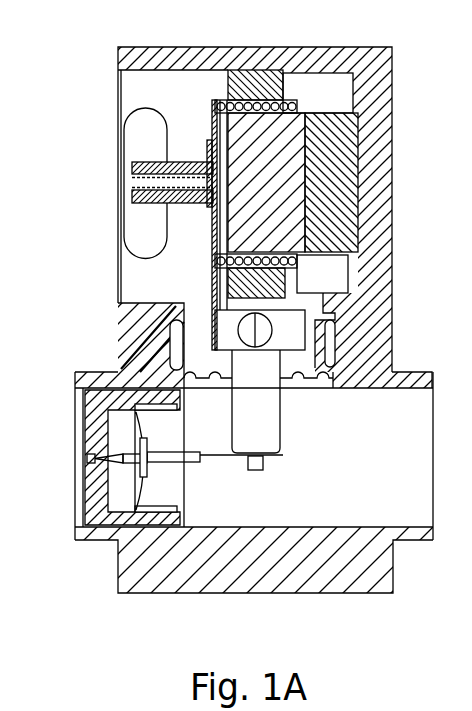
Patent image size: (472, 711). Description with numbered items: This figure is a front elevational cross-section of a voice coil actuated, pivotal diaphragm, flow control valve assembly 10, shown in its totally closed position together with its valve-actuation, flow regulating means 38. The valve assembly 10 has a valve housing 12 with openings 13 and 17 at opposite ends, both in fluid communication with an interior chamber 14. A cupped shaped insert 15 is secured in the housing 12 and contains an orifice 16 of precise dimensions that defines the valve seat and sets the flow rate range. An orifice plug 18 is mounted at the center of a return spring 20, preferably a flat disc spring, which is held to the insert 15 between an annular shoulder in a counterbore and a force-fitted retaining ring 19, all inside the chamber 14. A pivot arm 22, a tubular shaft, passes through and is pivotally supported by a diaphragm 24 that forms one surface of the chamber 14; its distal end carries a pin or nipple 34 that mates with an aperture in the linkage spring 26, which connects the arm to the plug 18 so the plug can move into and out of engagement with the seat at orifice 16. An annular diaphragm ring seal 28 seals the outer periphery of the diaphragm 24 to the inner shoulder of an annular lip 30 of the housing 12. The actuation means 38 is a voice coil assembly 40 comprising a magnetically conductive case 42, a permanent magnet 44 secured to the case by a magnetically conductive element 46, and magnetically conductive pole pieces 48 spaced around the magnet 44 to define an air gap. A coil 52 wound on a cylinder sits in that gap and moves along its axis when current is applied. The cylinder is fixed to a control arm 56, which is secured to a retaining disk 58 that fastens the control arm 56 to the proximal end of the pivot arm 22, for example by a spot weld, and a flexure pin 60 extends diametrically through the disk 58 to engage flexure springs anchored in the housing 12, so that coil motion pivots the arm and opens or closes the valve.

The valve assembly 10 is at (56, 431).
The valve housing 12 is at (392, 331).
The opening 13 is at (75, 394).
The interior chamber 14 is at (386, 463).
The cupped shaped insert 15 is at (93, 503).
The orifice 16 is at (110, 456).
The opening 17 is at (432, 386).
The orifice plug 18 is at (142, 472).
The retaining ring 19 is at (168, 506).
The return spring 20 is at (137, 418).
The pivot arm 22 is at (266, 437).
The diaphragm 24 is at (327, 386).
The linkage spring 26 is at (284, 456).
The annular diaphragm ring seal 28 is at (168, 336).
The annular lip 30 is at (168, 362).
The pin or nipple 34 is at (299, 116).
The valve-actuation means 38 is at (80, 211).
The voice coil assembly 40 is at (200, 117).
The magnetically conductive case 42 is at (392, 98).
The permanent magnet 44 is at (284, 178).
The magnetically conductive element 46 is at (348, 173).
The magnetically conductive pole pieces 48 is at (294, 47).
The coil 52 is at (216, 98).
The control arm 56 is at (211, 266).
The retaining disk 58 is at (300, 341).
The flexure pin 60 is at (268, 314).